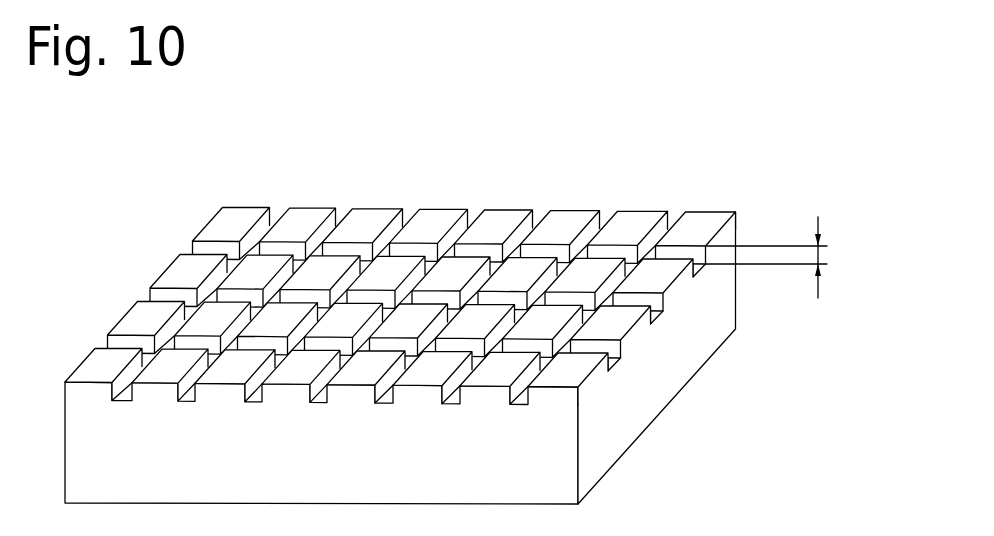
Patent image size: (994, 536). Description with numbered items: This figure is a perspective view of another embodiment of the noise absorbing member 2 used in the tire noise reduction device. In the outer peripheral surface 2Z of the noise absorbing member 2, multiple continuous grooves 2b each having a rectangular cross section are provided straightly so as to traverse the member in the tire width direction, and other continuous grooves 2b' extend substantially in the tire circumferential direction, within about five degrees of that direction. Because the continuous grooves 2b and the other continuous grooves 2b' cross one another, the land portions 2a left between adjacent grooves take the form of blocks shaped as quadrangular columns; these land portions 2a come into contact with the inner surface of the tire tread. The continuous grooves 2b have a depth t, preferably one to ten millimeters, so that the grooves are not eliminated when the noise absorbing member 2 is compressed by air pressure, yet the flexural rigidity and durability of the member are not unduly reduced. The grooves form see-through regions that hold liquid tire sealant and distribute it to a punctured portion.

The noise absorbing member 2 is at (667, 368).
The land portions 2a is at (305, 213).
The continuous grooves 2b is at (403, 188).
The other continuous grooves 2b' is at (161, 240).
The outer peripheral surface 2Z is at (703, 223).
The depth of continuous groove t is at (776, 257).